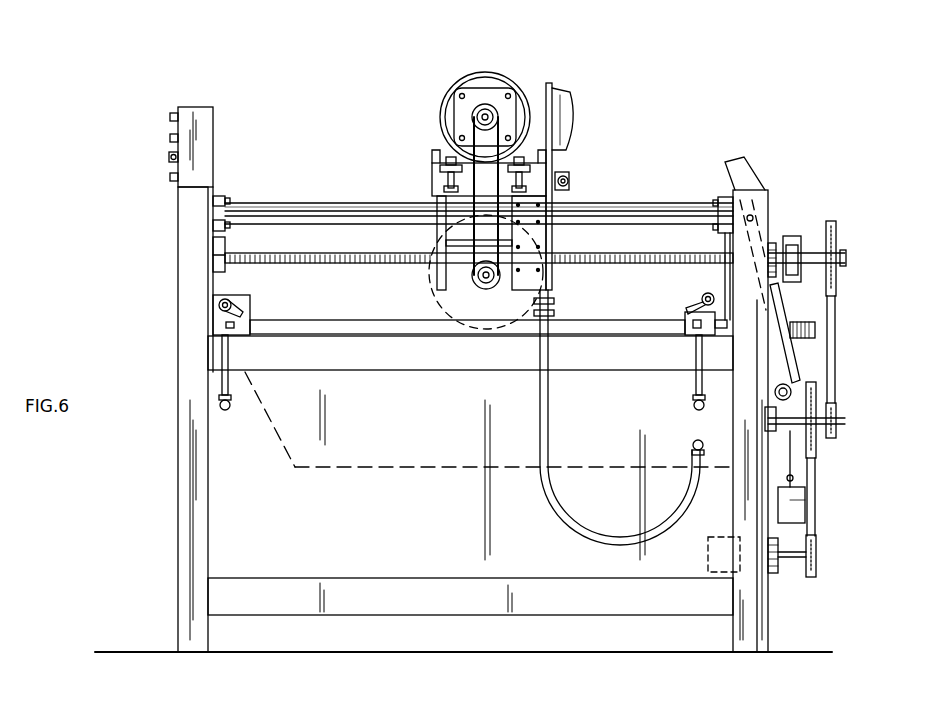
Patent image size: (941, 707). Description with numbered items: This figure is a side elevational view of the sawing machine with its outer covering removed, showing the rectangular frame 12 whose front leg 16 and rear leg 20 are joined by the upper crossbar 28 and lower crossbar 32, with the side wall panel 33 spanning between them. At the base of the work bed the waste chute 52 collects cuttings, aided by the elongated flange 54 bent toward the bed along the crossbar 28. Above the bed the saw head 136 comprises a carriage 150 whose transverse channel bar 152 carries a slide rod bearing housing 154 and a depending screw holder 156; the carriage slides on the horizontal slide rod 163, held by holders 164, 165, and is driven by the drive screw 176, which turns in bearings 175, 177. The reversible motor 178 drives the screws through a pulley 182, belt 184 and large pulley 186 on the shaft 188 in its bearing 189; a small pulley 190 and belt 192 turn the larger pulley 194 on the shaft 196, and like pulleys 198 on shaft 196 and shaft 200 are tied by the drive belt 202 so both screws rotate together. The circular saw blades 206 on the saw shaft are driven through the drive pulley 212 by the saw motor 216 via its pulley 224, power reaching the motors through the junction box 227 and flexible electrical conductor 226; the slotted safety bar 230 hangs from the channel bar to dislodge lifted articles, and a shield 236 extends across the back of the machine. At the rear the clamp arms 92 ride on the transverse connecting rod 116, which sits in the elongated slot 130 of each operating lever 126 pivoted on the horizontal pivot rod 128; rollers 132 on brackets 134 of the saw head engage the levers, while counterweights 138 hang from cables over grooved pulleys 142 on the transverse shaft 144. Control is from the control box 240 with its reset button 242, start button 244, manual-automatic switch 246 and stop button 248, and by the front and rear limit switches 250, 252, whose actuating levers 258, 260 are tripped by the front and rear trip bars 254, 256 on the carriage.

The rectangular frame 12 is at (463, 494).
The front leg 16 is at (178, 592).
The rear leg 20 is at (768, 615).
The upper crossbar 28 is at (373, 370).
The lower crossbar 32 is at (369, 615).
The side wall panel 33 is at (458, 566).
The waste chute 52 is at (352, 470).
The elongated flange 54 is at (305, 321).
The clamp arm 92 is at (704, 360).
The transverse connecting rod 116 is at (796, 322).
The operating lever 126 is at (740, 160).
The horizontal pivot rod 128 is at (772, 243).
The elongated slot 130 is at (800, 345).
The roller 132 is at (570, 184).
The bracket 134 is at (568, 176).
The saw head 136 is at (525, 58).
The counterweight 138 is at (806, 508).
The grooved pulley 142 is at (765, 413).
The transverse shaft 144 is at (790, 392).
The carriage 150 is at (424, 190).
The transverse horizontal channel bar 152 is at (436, 162).
The slide rod bearing housing 154 is at (436, 200).
The screw holder 156 is at (548, 262).
The horizontal slide rod 163 is at (290, 190).
The holder 164 is at (220, 200).
The holder 165 is at (720, 198).
The bearing 175 is at (226, 243).
The drive screw 176 is at (378, 264).
The bearing 177 is at (768, 215).
The reversible motor 178 is at (778, 570).
The pulley 182 is at (818, 558).
The belt 184 is at (816, 498).
The large pulley 186 is at (818, 440).
The shaft 188 is at (846, 421).
The bearing 189 is at (765, 448).
The small pulley 190 is at (838, 410).
The belt 192 is at (838, 336).
The larger pulley 194 is at (838, 228).
The shaft 196 is at (846, 258).
The like pulley 198 is at (802, 255).
The shaft 200 is at (828, 280).
The drive belt 202 is at (792, 238).
The circular saw blade 206 is at (452, 328).
The drive pulley 212 is at (486, 282).
The saw motor 216 is at (465, 78).
The pulley 224 is at (486, 104).
The flexible electrical conductor 226 is at (540, 372).
The junction box 227 is at (568, 105).
The slotted safety bar 230 is at (518, 320).
The shield 236 is at (725, 282).
The control box 240 is at (213, 125).
The reset button 242 is at (170, 117).
The start button 244 is at (170, 138).
The manual-automatic switch 246 is at (169, 157).
The stop button 248 is at (170, 177).
The front limit switch 250 is at (213, 322).
The rear limit switch 252 is at (686, 330).
The front trip bar 254 is at (430, 270).
The rear trip bar 256 is at (548, 290).
The actuating lever 258 is at (222, 303).
The actuating lever 260 is at (700, 300).